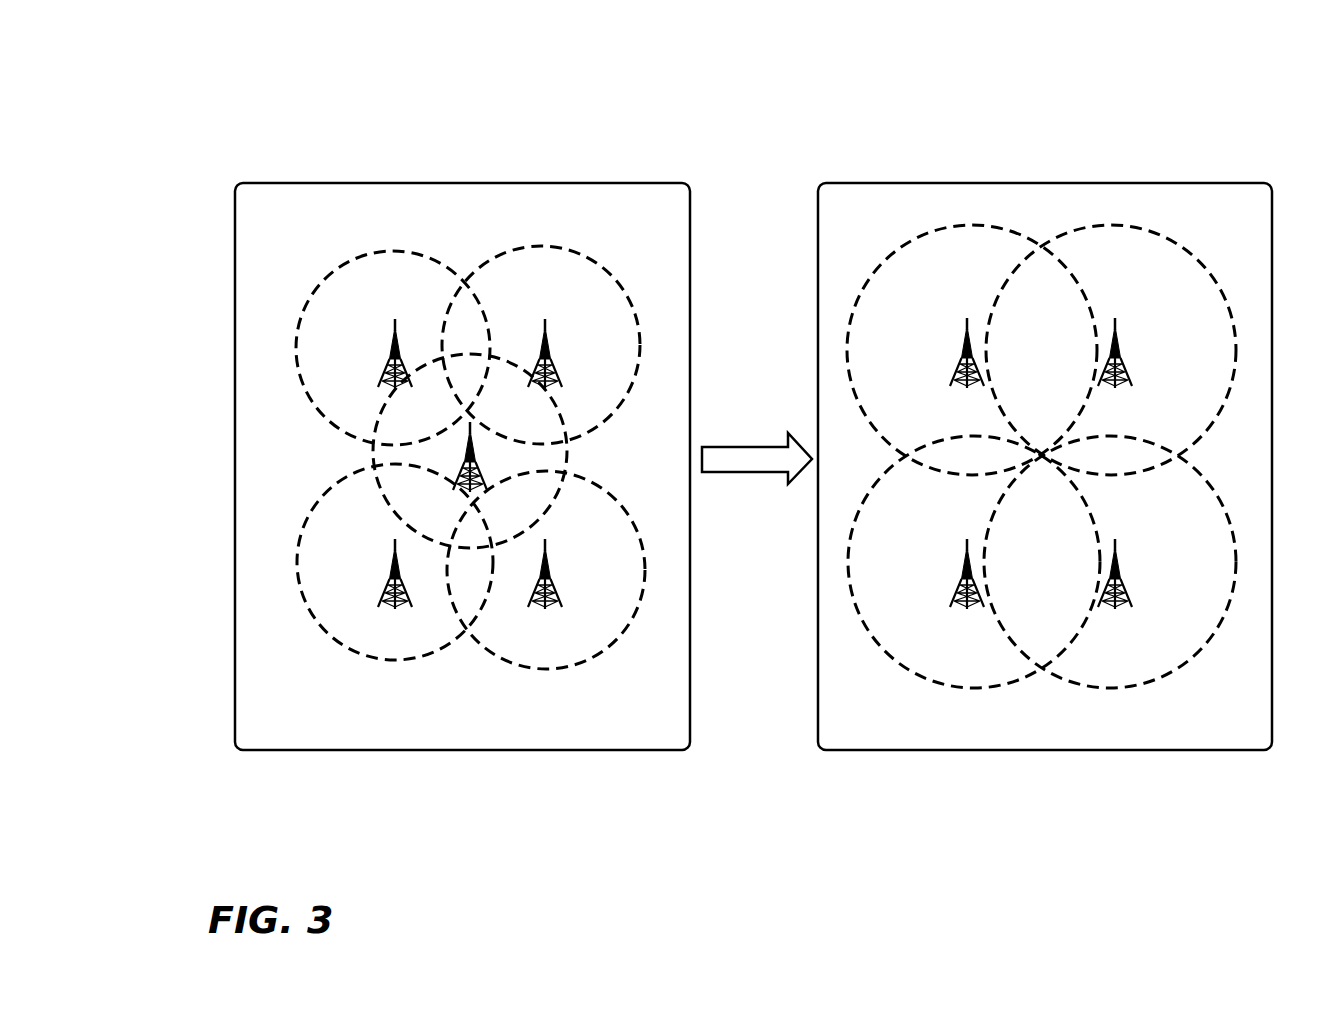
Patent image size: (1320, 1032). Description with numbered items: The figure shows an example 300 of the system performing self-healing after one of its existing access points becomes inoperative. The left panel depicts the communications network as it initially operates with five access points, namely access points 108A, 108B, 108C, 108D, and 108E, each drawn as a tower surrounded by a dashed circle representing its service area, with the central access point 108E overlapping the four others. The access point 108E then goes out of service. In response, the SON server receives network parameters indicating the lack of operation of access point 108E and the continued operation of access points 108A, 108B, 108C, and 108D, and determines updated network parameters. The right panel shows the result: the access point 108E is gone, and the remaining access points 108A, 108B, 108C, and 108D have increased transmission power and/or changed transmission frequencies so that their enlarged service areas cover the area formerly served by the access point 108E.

The example of self-healing 300 is at (250, 43).
The access point 108A is at (696, 350).
The access point 108B is at (839, 350).
The access point 108C is at (698, 562).
The access point 108D is at (841, 562).
The access point 108E is at (470, 451).